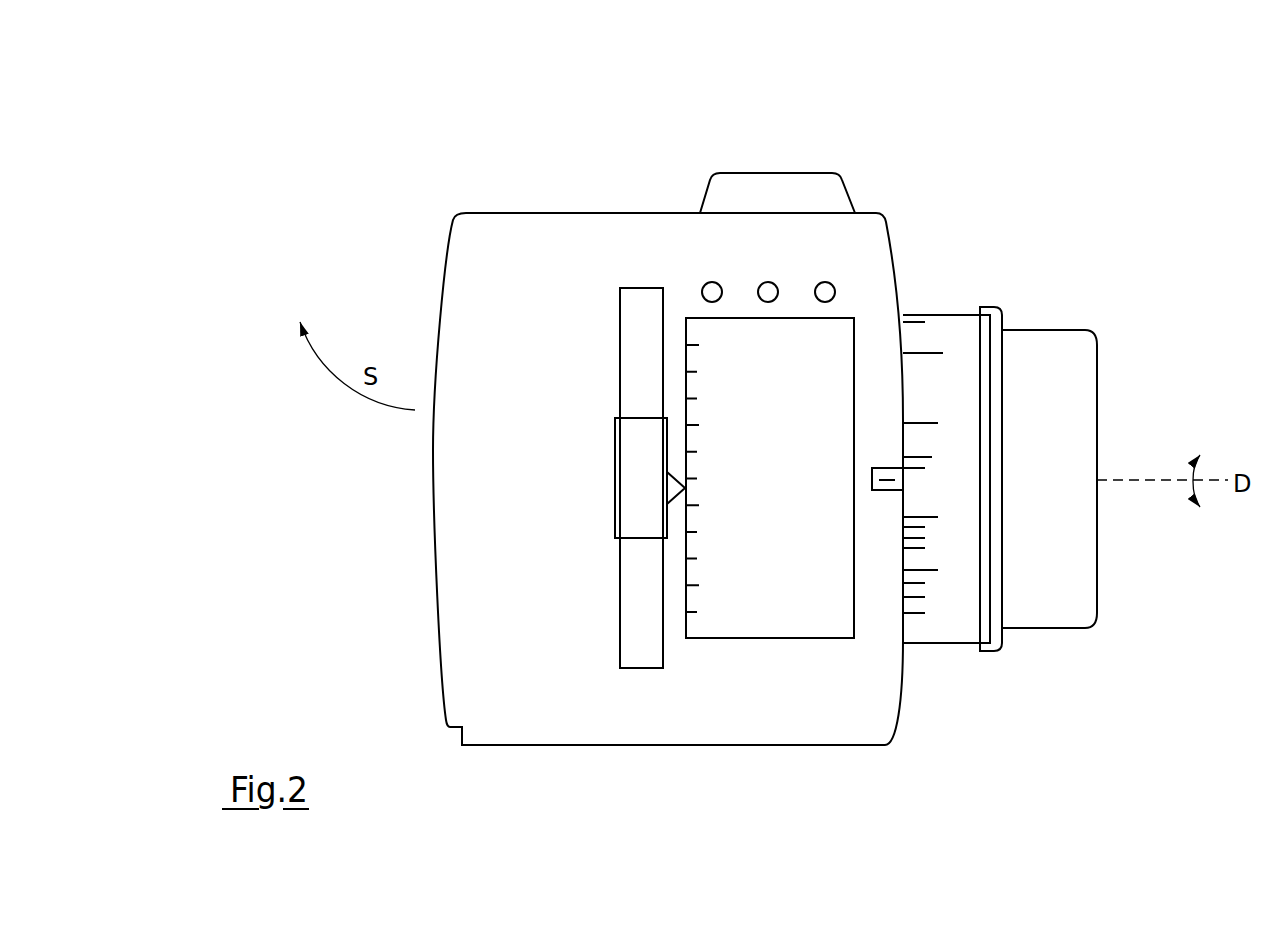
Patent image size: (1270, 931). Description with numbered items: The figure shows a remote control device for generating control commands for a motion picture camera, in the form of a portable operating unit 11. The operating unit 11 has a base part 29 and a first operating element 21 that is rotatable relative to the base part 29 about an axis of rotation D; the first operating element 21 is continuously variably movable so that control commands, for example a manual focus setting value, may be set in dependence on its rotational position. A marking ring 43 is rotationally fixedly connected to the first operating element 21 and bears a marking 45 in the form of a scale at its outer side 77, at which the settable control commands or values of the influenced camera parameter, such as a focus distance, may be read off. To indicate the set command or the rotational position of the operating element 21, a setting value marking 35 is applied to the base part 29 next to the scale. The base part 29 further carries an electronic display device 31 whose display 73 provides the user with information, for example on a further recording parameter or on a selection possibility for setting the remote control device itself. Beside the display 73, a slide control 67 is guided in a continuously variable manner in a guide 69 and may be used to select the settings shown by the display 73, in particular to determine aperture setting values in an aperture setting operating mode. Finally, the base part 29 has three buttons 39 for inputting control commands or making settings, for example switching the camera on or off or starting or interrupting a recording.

The operating unit 11 is at (303, 143).
The first operating element 21 is at (1040, 352).
The base part 29 is at (842, 685).
The electronic display device 31 is at (823, 360).
The setting value marking 35 is at (885, 481).
The buttons 39 is at (707, 283).
The marking ring 43 is at (968, 327).
The marking 45 is at (938, 345).
The slide control 67 is at (636, 488).
The guide 69 is at (637, 612).
The display 73 is at (694, 632).
The outer side 77 is at (968, 588).